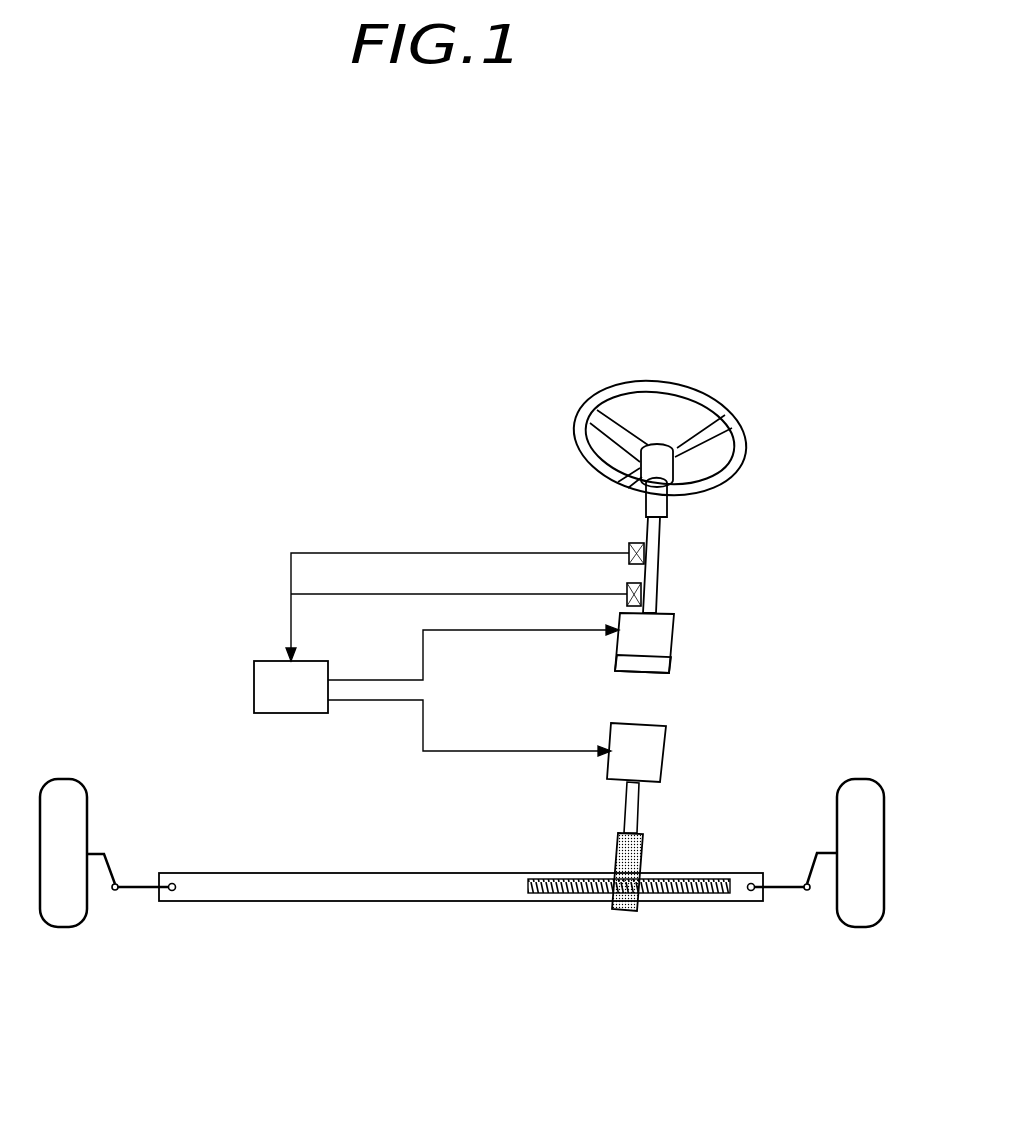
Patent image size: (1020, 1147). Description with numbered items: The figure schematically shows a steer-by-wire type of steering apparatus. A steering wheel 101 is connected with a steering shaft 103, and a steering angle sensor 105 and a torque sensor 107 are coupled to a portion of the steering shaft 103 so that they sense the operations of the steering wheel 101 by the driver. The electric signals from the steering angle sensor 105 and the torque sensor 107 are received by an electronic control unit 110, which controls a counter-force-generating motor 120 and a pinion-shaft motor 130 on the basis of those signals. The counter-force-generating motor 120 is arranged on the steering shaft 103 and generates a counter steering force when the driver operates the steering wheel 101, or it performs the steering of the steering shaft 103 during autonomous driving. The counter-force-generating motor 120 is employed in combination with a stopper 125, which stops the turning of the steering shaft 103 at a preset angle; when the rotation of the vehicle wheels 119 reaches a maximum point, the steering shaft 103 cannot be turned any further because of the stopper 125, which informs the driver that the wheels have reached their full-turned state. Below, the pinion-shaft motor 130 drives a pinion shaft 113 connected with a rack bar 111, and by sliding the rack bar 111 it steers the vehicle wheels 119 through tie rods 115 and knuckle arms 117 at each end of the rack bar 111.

The steering wheel 101 is at (740, 441).
The steering shaft 103 is at (656, 567).
The steering angle sensor 105 is at (628, 547).
The torque sensor 107 is at (626, 591).
The electronic control unit 110 is at (253, 689).
The rack bar 111 is at (375, 895).
The pinion shaft 113 is at (637, 846).
The tie rods 115 is at (130, 892).
The knuckle arms 117 is at (113, 868).
The vehicle wheels 119 is at (82, 808).
The counter-force-generating motor 120 is at (667, 637).
The stopper 125 is at (671, 667).
The pinion-shaft motor 130 is at (659, 741).